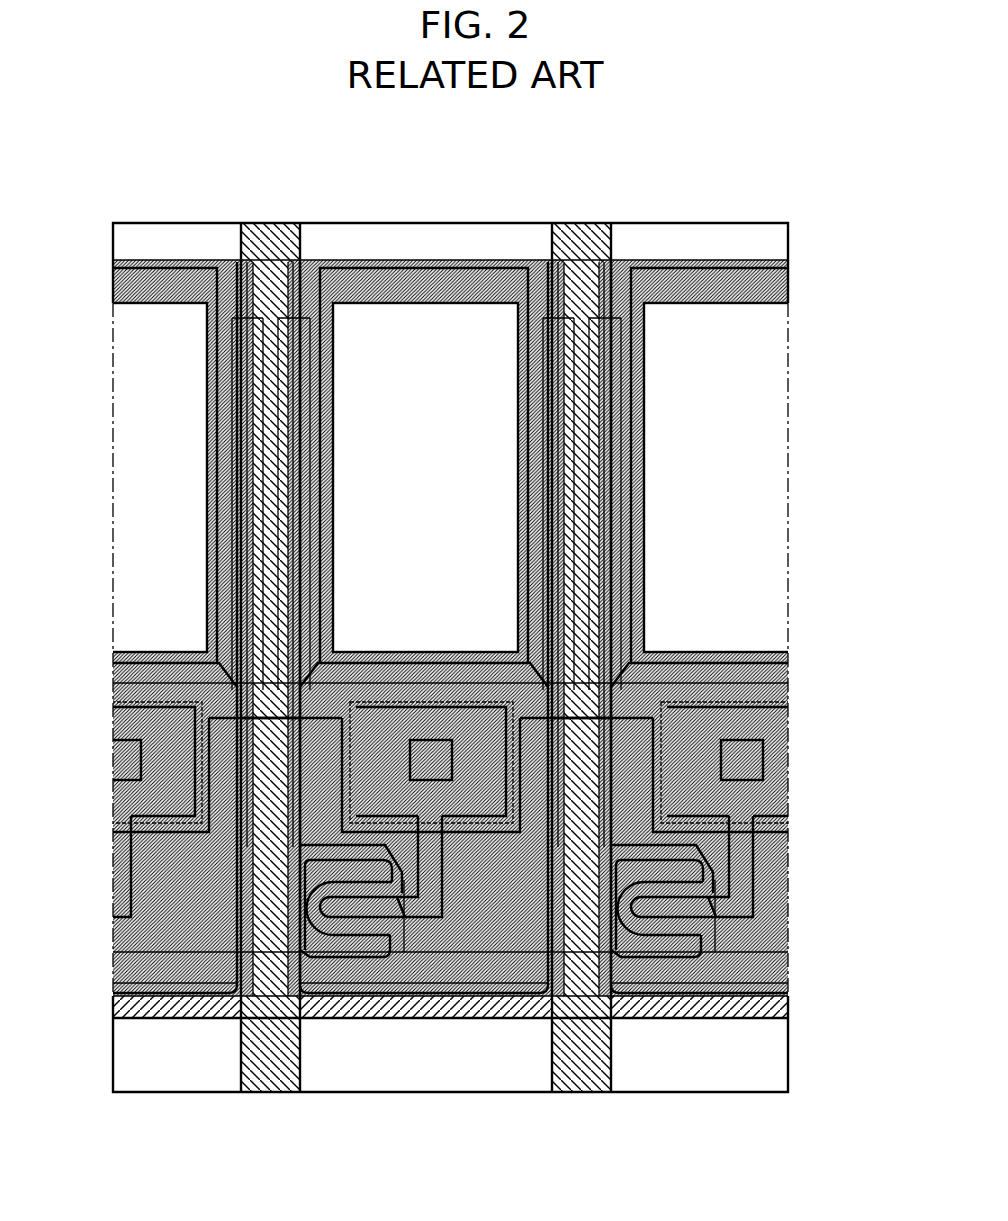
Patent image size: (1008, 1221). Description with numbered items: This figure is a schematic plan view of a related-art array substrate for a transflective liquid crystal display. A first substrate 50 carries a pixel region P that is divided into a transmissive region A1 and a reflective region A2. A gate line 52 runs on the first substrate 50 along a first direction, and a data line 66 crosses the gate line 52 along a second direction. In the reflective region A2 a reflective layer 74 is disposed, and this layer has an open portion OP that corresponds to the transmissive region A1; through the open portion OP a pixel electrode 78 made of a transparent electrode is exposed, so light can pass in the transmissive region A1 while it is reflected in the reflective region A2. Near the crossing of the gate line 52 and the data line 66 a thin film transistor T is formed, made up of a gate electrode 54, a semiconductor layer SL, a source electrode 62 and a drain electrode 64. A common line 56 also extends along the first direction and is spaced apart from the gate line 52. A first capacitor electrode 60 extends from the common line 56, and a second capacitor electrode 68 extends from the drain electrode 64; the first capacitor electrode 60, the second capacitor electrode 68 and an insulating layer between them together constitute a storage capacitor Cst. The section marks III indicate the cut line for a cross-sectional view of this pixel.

The first substrate 50 is at (767, 1087).
The gate line 52 is at (797, 953).
The gate electrode 54 is at (703, 885).
The common line 56 is at (797, 663).
The first capacitor electrode 60 is at (329, 715).
The source electrode 62 is at (640, 838).
The drain electrode 64 is at (772, 850).
The data line 66 is at (290, 1060).
The second capacitor electrode 68 is at (772, 721).
The reflective layer 74 is at (125, 260).
The pixel electrode 78 is at (190, 260).
The open portion OP is at (755, 370).
The storage capacitor Cst is at (441, 705).
The semiconductor layer SL is at (703, 930).
The thin film transistor T is at (682, 970).
The pixel region P is at (63, 303).
The transmissive region A1 is at (95, 303).
The reflective region A2 is at (95, 652).
The section line III is at (357, 425).